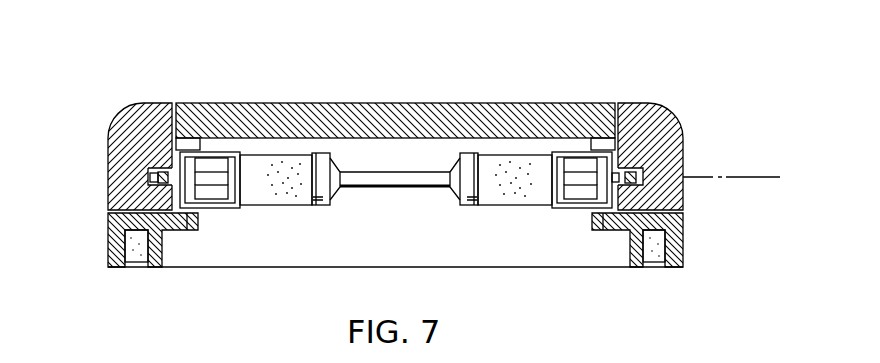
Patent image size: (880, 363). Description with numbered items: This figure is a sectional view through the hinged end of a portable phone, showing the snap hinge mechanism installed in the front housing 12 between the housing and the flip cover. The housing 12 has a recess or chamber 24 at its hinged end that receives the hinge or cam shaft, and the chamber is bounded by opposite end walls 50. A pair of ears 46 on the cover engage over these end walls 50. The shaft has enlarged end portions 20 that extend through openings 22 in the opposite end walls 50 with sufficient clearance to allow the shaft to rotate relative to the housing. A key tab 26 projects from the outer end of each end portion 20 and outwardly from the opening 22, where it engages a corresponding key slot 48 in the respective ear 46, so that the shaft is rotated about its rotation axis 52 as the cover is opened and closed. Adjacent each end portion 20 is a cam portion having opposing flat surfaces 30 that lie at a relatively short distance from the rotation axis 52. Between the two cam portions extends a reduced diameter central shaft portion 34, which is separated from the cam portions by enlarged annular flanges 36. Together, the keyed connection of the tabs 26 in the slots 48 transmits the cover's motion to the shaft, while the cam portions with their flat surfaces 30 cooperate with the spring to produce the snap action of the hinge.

The front housing 12 is at (227, 107).
The enlarged end portion 20 is at (230, 210).
The opening 22 is at (191, 232).
The recess or chamber 24 is at (404, 153).
The key tab 26 is at (165, 172).
The flat surface 30 is at (277, 198).
The central shaft portion 34 is at (367, 178).
The annular flange 36 is at (322, 160).
The ear 46 is at (127, 113).
The key slot 48 is at (150, 181).
The end wall 50 is at (168, 126).
The rotation axis 52 is at (737, 176).